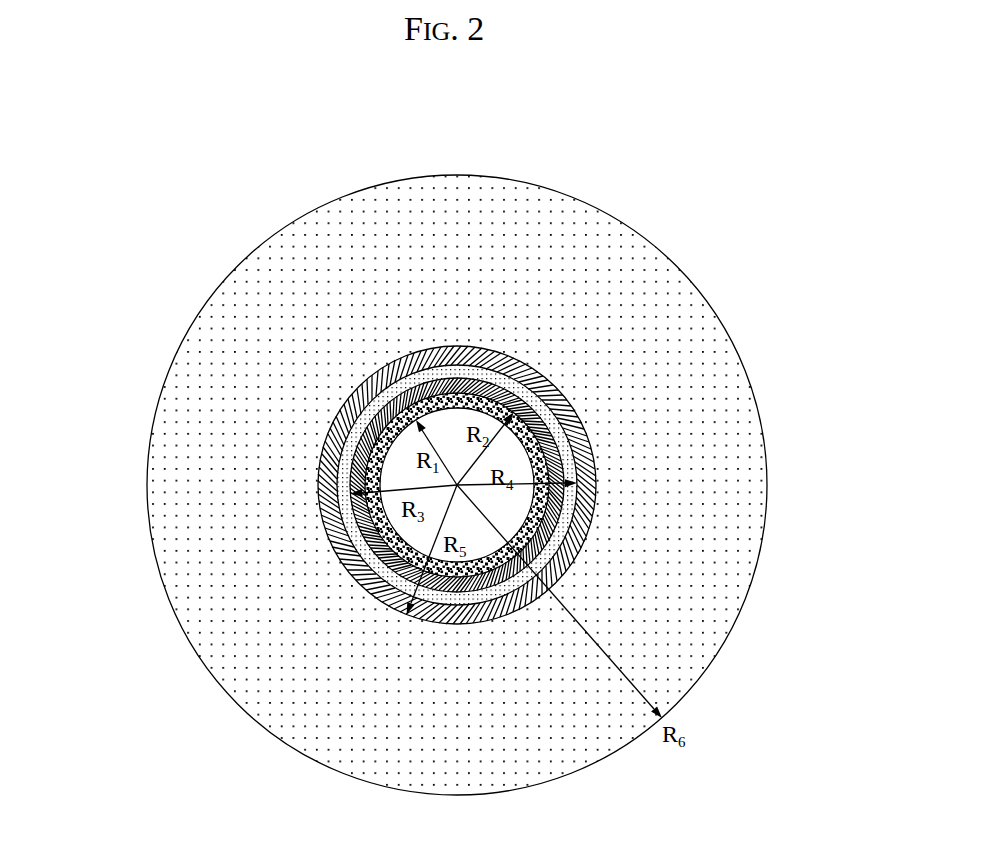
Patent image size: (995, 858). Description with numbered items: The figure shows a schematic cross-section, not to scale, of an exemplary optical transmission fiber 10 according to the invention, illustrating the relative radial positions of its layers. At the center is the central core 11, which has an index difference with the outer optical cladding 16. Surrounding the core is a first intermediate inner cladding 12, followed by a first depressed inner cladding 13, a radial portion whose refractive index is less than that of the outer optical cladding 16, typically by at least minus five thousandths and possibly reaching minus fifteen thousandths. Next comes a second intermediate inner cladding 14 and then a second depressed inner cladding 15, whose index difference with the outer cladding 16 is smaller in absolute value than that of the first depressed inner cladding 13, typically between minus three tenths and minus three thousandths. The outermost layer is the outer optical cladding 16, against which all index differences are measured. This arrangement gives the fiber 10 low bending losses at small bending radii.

The optical transmission fiber 10 is at (680, 201).
The central core 11 is at (405, 455).
The first intermediate inner cladding 12 is at (512, 416).
The first depressed inner cladding 13 is at (367, 492).
The second intermediate inner cladding 14 is at (577, 492).
The second depressed inner cladding 15 is at (408, 607).
The outer optical cladding 16 is at (667, 625).